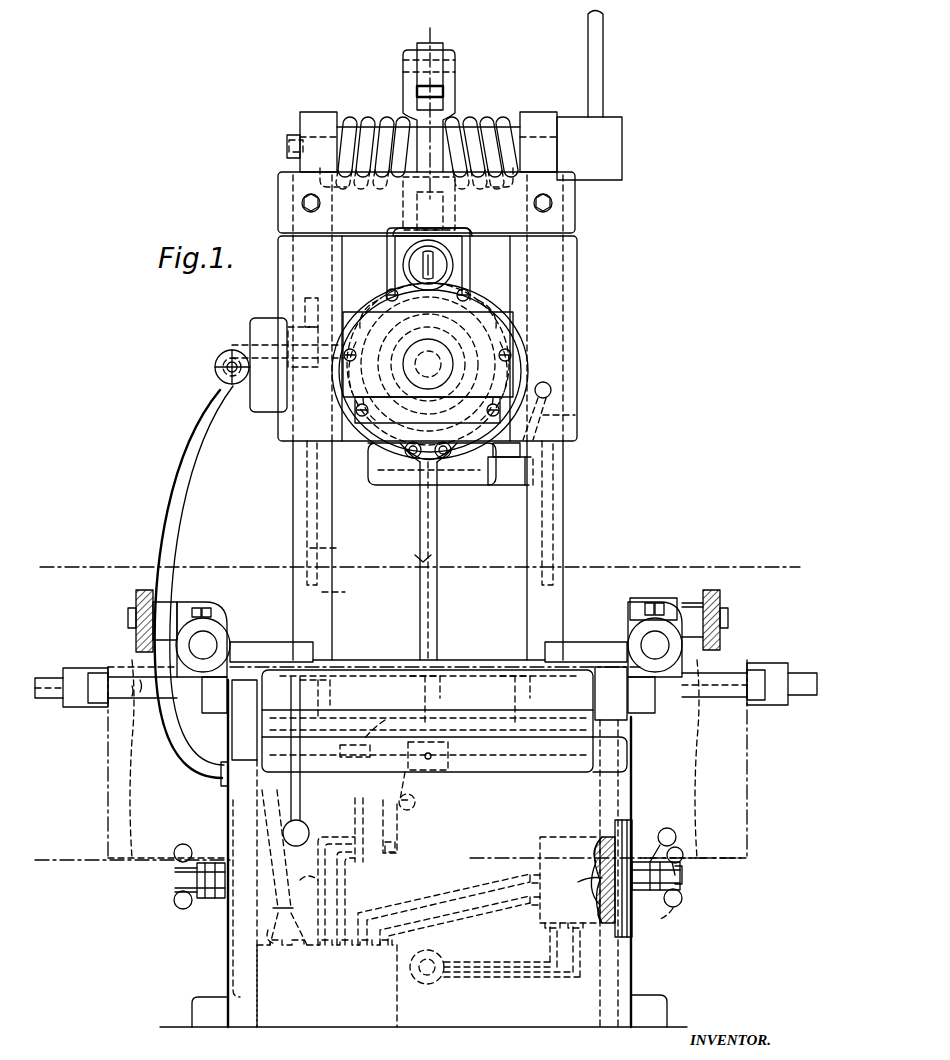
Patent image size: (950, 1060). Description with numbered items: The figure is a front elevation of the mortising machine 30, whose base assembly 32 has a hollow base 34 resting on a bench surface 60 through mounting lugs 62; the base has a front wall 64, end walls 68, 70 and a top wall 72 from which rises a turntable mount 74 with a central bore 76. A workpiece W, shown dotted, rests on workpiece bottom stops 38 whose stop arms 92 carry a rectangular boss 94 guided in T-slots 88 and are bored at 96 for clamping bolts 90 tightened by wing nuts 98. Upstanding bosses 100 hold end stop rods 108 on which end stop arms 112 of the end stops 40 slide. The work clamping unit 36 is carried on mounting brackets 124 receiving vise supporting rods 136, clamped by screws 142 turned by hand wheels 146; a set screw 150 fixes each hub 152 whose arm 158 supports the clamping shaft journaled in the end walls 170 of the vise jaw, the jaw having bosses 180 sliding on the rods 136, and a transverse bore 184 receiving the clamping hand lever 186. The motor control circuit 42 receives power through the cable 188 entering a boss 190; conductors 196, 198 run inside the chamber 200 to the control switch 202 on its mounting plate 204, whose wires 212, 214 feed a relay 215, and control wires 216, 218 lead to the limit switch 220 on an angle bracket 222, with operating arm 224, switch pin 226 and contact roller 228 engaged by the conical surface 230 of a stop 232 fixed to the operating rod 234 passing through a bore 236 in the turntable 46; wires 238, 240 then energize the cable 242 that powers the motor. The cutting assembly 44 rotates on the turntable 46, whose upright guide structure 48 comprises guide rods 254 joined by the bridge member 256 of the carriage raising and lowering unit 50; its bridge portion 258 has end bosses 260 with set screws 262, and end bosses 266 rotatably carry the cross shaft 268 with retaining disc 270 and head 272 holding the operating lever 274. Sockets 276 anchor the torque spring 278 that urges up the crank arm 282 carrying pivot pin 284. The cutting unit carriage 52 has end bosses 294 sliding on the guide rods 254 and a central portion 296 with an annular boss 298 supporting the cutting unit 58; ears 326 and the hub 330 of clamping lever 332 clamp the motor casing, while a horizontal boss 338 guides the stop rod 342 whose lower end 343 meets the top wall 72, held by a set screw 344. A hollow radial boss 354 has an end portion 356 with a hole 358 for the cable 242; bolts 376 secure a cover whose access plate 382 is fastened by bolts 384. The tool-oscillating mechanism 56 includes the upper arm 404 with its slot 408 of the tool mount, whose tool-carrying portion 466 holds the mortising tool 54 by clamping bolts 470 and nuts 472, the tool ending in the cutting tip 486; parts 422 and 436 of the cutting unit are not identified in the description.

The mortising machine 30 is at (590, 470).
The base assembly 32 is at (634, 778).
The hollow base 34 is at (256, 822).
The work clamping unit 36 is at (556, 735).
The workpiece bottom stops 38 is at (211, 898).
The workpiece end stops 40 is at (80, 668).
The motor control circuit 42 is at (490, 878).
The cutting assembly 44 is at (580, 388).
The turntable 46 is at (372, 684).
The upright guide structure 48 is at (291, 496).
The carriage raising and lowering unit 50 is at (367, 110).
The cutting unit carriage 52 is at (580, 294).
The mortising tool 54 is at (418, 492).
The tool-oscillating mechanism 56 is at (382, 349).
The horizontally-adjustable cutting unit 58 is at (534, 360).
The mounting surface 60 is at (185, 1024).
The mounting flanges or lugs 62 is at (207, 998).
The front wall 64 is at (472, 1028).
The end wall 68 is at (223, 954).
The end wall 70 is at (634, 957).
The top wall 72 is at (505, 740).
The turntable mount 74 is at (530, 712).
The central bore 76 is at (370, 729).
The T-slots 88 is at (618, 840).
The clamping bolts 90 is at (690, 878).
The workpiece bottom stop arms 92 is at (207, 856).
The rectangular boss 94 is at (602, 880).
The bore 96 is at (690, 915).
The wing nuts 98 is at (176, 905).
The upstanding bosses 100 is at (277, 642).
The end stop rods 108 is at (45, 676).
The end stop arms 112 is at (95, 684).
The mounting brackets 124 is at (192, 596).
The clamping vise supporting rods 136 is at (212, 645).
The screws 142 is at (130, 618).
The thumb screws or hand wheels 146 is at (140, 594).
The set screw 150 is at (207, 606).
The hub 152 is at (214, 626).
The arm 158 is at (210, 714).
The end walls 170 is at (430, 713).
The upstanding bosses 180 is at (227, 608).
The transverse bore 184 is at (326, 700).
The clamping hand lever 186 is at (300, 795).
The flexible two-conductor cable 188 is at (455, 950).
The boss 190 is at (424, 950).
The conductor 196 is at (550, 978).
The conductor 198 is at (550, 950).
The chamber 200 is at (600, 866).
The control switch 202 is at (567, 821).
The mounting plate 204 is at (645, 930).
The wire 212 is at (485, 923).
The wire 214 is at (477, 899).
The relay 215 is at (398, 1007).
The wire 216 is at (348, 888).
The wire 218 is at (306, 888).
The limit switch 220 is at (444, 906).
The angle bracket 222 is at (368, 750).
The operating arm 224 is at (416, 831).
The switch pin 226 is at (424, 815).
The contact roller 228 is at (442, 796).
The conical surface 230 is at (459, 779).
The switch actuating stop 232 is at (453, 748).
The limit switch operating rod 234 is at (437, 628).
The bore 236 is at (417, 697).
The wire 238 is at (295, 948).
The wire 240 is at (268, 948).
The cable 242 is at (190, 480).
The guide rods 254 is at (300, 527).
The bridge member 256 is at (579, 205).
The bridge portion 258 is at (577, 240).
The end bosses 260 is at (280, 195).
The set screws 262 is at (302, 207).
The end bosses 266 is at (320, 114).
The cross shaft 268 is at (495, 124).
The retaining disc 270 is at (287, 143).
The head 272 is at (622, 144).
The operating lever 274 is at (603, 78).
The sockets 276 is at (338, 184).
The double helical torque spring 278 is at (380, 114).
The crank arm 282 is at (422, 148).
The pivot pin 284 is at (438, 54).
The end bosses 294 is at (290, 288).
The central portion 296 is at (368, 450).
The annular boss 298 is at (475, 252).
The ears 326 is at (372, 485).
The hub 330 is at (508, 485).
The clamping lever 332 is at (560, 418).
The horizontal boss 338 is at (290, 320).
The stop rod 342 is at (341, 548).
The lower end 343 is at (348, 591).
The set screw 344 is at (287, 347).
The hollow radial boss 354 is at (262, 398).
The end portion 356 is at (216, 368).
The hole 358 is at (226, 350).
The bolts 376 is at (386, 291).
The access plate 382 is at (498, 340).
The bolts 384 is at (427, 367).
The upper arm 404 is at (468, 345).
The slot 408 is at (142, 705).
The ring 422 is at (405, 326).
The hub 436 is at (435, 357).
The tool-carrying portion 466 is at (452, 455).
The tool clamping bolts 470 is at (405, 455).
The tool clamping nuts 472 is at (510, 464).
The cutting tip 486 is at (420, 562).
The workpiece W is at (105, 838).